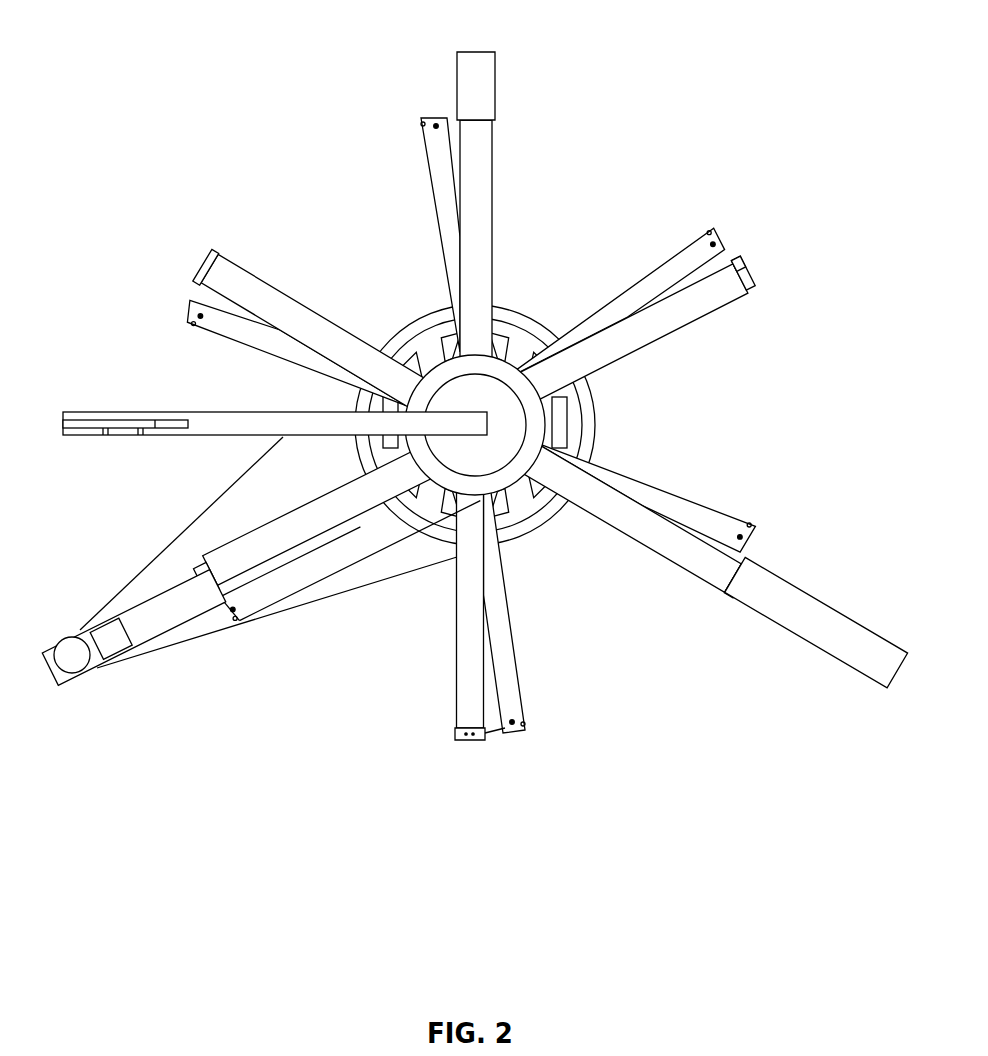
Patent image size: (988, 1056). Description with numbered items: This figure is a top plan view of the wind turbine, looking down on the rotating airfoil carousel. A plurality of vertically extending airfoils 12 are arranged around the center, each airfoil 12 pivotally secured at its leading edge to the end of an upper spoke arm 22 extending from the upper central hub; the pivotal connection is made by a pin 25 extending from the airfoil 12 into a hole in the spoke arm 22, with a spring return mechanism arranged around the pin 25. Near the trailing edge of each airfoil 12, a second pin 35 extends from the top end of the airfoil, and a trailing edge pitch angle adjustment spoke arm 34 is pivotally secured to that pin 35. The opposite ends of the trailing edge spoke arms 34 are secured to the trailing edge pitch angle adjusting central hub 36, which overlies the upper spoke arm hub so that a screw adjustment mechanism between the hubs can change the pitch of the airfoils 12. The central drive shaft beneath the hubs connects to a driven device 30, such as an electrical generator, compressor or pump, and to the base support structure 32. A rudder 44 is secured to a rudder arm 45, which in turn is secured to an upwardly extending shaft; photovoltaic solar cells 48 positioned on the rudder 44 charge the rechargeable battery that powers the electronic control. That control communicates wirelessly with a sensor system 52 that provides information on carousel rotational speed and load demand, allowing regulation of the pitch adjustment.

The airfoil 12 is at (727, 244).
The upper spoke arm 22 is at (672, 258).
The pin 25 is at (706, 230).
The driven device 30 is at (77, 678).
The base support structure 32 is at (477, 52).
The trailing edge pitch angle adjustment spoke arm 34 is at (680, 320).
The pin 35 is at (745, 265).
The trailing edge pitch angle adjusting central hub 36 is at (489, 407).
The rudder 44 is at (143, 413).
The rudder arm 45 is at (133, 413).
The photovoltaic solar cells 48 is at (133, 435).
The sensor system 52 is at (118, 658).